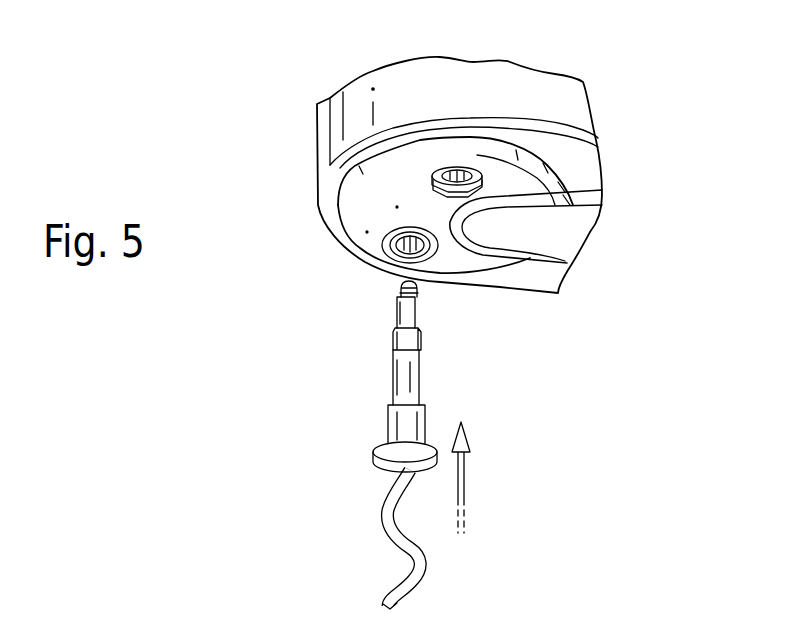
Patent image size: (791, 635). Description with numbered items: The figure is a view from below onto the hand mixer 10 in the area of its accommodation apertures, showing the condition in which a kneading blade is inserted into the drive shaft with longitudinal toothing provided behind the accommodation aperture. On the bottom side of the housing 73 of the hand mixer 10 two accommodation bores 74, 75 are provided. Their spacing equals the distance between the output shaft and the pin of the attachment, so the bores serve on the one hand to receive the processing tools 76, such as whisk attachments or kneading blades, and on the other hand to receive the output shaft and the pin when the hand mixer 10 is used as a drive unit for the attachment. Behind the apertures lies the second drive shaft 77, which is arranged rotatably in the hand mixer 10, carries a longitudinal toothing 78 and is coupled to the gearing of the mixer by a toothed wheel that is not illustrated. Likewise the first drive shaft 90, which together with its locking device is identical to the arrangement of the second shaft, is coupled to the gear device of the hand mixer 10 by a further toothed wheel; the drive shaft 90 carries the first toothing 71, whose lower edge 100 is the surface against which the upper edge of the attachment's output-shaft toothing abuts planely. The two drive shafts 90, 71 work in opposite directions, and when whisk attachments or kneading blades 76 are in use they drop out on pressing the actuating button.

The hand mixer 10 is at (333, 122).
The first toothing 71 is at (458, 168).
The bottom side of the housing 73 is at (367, 206).
The accommodation bore 74 is at (432, 186).
The accommodation bore 75 is at (387, 242).
The processing tool 76 is at (397, 420).
The second drive shaft 77 is at (390, 250).
The longitudinal toothing 78 is at (410, 245).
The first drive shaft 90 is at (470, 168).
The lower edge 100 is at (482, 189).